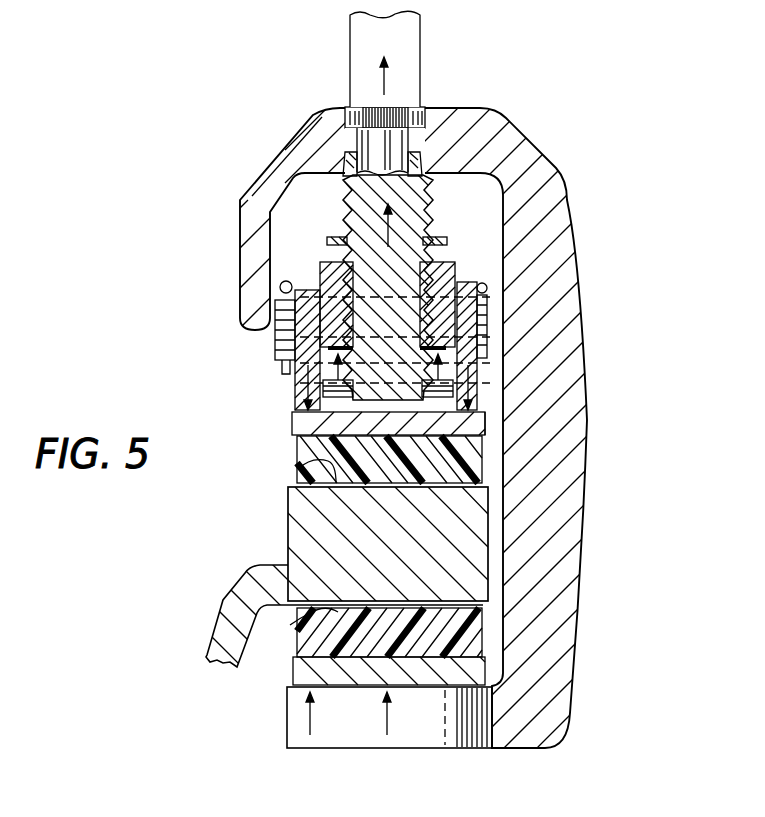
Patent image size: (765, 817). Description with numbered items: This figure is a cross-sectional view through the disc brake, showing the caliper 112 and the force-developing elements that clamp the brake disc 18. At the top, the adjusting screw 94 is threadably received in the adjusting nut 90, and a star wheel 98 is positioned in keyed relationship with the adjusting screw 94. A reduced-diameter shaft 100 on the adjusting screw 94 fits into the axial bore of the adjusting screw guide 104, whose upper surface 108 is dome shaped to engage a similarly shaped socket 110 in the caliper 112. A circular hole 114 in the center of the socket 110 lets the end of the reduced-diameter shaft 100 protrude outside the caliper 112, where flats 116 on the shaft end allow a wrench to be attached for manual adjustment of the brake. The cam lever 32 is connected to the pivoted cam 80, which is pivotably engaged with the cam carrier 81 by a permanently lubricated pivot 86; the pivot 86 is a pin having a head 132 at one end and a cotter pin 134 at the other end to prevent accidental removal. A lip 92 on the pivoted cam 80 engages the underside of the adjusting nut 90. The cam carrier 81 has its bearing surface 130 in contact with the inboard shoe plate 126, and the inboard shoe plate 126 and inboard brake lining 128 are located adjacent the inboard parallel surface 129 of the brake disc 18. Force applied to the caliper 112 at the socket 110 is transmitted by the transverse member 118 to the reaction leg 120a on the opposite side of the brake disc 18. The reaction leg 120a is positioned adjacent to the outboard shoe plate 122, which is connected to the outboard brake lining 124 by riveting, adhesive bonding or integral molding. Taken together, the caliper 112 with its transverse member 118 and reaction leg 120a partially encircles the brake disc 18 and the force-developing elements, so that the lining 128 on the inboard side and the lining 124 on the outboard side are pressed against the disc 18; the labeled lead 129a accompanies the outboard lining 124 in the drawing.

The brake disc 18 is at (297, 515).
The cam lever 32 is at (416, 38).
The pivoted cam 80 is at (312, 432).
The cam carrier 81 is at (478, 387).
The pivot 86 is at (277, 339).
The adjusting nut 90 is at (444, 260).
The lip 92 is at (445, 352).
The adjusting screw 94 is at (347, 223).
The star wheel 98 is at (337, 236).
The reduced-diameter shaft 100 is at (373, 147).
The adjusting screw guide 104 is at (420, 198).
The upper surface 108 is at (433, 167).
The socket 110 is at (340, 183).
The caliper 112 is at (293, 137).
The circular hole 114 is at (412, 140).
The flats 116 is at (402, 103).
The transverse member 118 is at (592, 421).
The reaction leg 120a is at (362, 744).
The outboard shoe plate 122 is at (300, 672).
The outboard brake lining 124 is at (307, 645).
The inboard shoe plate 126 is at (297, 426).
The inboard brake lining 128 is at (307, 455).
The inboard parallel surface 129 is at (298, 477).
The electrode lead 129a is at (299, 625).
The bearing surface 130 is at (482, 418).
The head 132 is at (490, 321).
The cotter pin 134 is at (280, 290).